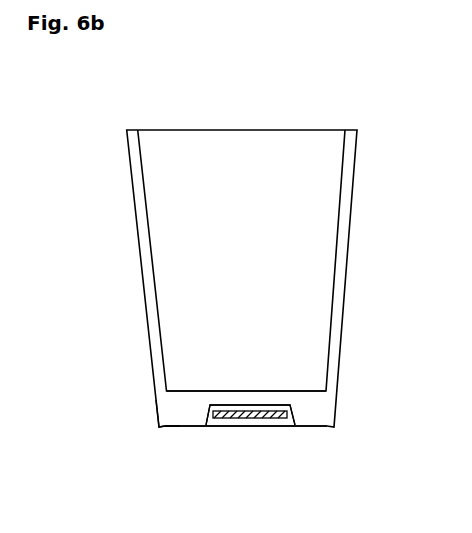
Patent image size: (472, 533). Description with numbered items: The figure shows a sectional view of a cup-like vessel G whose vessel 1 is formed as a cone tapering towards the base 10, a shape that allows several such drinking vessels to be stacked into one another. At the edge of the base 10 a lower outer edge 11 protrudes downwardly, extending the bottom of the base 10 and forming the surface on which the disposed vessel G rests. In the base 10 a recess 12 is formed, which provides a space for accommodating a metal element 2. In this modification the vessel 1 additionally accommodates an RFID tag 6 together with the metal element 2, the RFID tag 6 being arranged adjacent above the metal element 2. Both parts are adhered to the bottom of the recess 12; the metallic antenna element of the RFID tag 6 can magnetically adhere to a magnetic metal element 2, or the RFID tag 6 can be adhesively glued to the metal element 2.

The cup-like vessel G is at (374, 104).
The vessel 1 is at (134, 203).
The base 10 is at (187, 415).
The lower outer edge 11 is at (160, 429).
The recess 12 is at (220, 420).
The RFID tag 6 is at (289, 408).
The metal element 2 is at (271, 419).